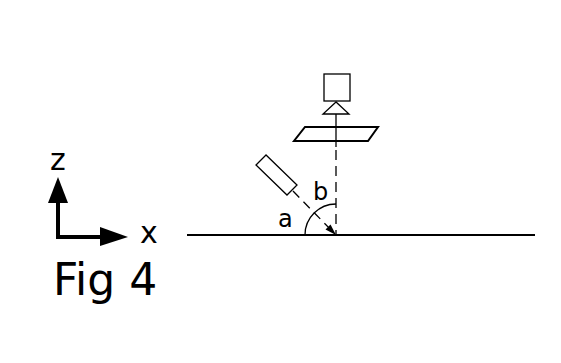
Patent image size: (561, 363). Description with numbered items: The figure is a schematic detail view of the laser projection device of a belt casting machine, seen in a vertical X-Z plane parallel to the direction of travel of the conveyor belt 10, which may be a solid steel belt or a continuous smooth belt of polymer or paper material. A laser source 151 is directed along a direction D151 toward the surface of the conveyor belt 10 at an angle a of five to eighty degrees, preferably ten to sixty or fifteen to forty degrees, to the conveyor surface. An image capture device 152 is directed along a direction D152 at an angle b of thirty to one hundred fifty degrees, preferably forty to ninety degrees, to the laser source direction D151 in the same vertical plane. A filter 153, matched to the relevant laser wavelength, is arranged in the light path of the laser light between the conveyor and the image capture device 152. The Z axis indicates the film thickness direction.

The conveyor belt 10 is at (413, 237).
The laser source 151 is at (258, 163).
The image capture device 152 is at (333, 95).
The filter 153 is at (305, 129).
The laser source direction D151 is at (327, 235).
The image capture device direction D152 is at (337, 160).